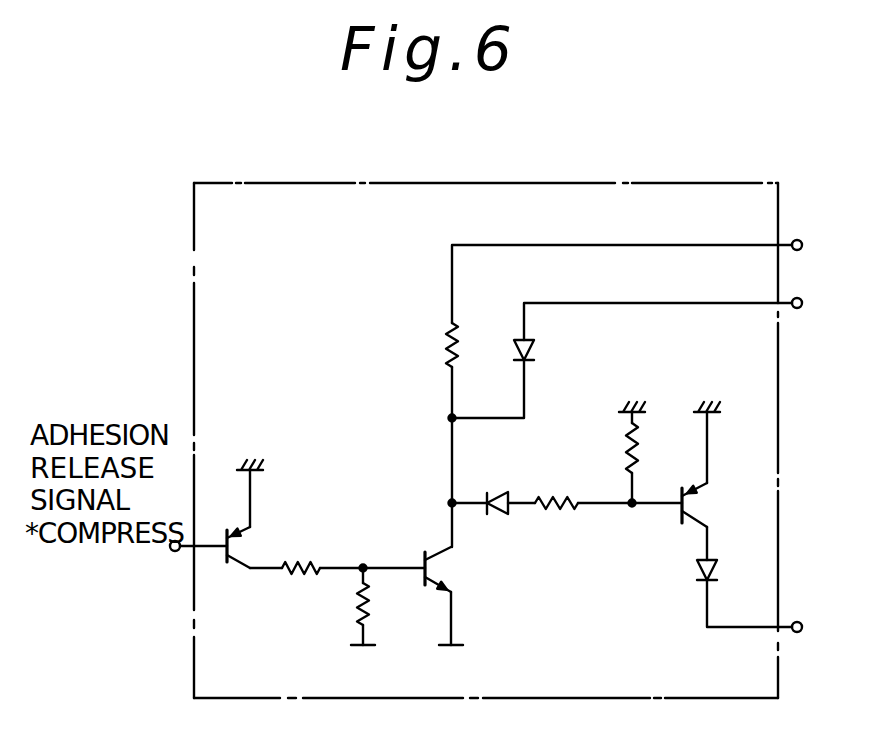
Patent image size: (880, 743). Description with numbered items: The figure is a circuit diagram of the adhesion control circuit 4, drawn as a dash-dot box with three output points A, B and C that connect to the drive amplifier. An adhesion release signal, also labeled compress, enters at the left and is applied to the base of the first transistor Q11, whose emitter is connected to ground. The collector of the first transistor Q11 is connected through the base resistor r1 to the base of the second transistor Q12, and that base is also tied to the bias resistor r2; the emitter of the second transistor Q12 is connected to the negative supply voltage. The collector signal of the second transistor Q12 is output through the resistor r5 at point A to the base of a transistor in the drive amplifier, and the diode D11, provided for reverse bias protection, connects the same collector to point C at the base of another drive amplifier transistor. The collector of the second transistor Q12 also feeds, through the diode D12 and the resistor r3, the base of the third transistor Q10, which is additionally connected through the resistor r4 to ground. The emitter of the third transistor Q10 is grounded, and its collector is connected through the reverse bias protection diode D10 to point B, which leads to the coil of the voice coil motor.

The adhesion control circuit 4 is at (194, 241).
The third transistor Q10 is at (723, 505).
The first transistor Q11 is at (269, 547).
The second transistor Q12 is at (467, 569).
The reverse bias protection diode D10 is at (737, 575).
The diode D11 is at (553, 353).
The diode D12 is at (506, 486).
The base resistor r1 is at (301, 584).
The bias resistor r2 is at (378, 606).
The resistor r3 is at (556, 522).
The resistor r4 is at (646, 448).
The resistor r5 is at (431, 345).